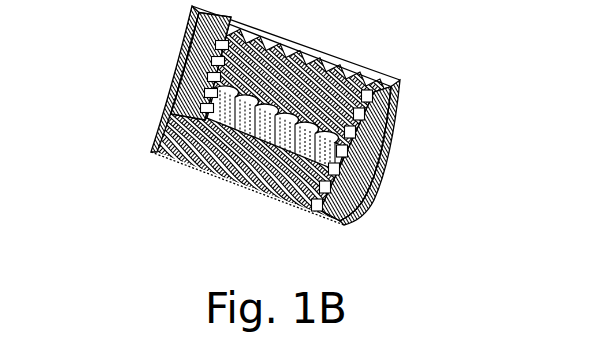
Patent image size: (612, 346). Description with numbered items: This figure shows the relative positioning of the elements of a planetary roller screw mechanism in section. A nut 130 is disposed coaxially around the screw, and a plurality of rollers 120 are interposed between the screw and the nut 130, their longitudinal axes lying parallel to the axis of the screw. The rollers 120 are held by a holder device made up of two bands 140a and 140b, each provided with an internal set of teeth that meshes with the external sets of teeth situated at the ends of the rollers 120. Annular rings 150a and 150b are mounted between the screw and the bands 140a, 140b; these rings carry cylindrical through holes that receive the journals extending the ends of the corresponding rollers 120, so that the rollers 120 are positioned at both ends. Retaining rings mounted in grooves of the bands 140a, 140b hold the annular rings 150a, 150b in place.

The rollers 120 is at (188, 68).
The nut 130 is at (326, 62).
The band 140a is at (177, 160).
The band 140b is at (316, 222).
The annular ring 150a is at (170, 118).
The annular ring 150b is at (370, 168).